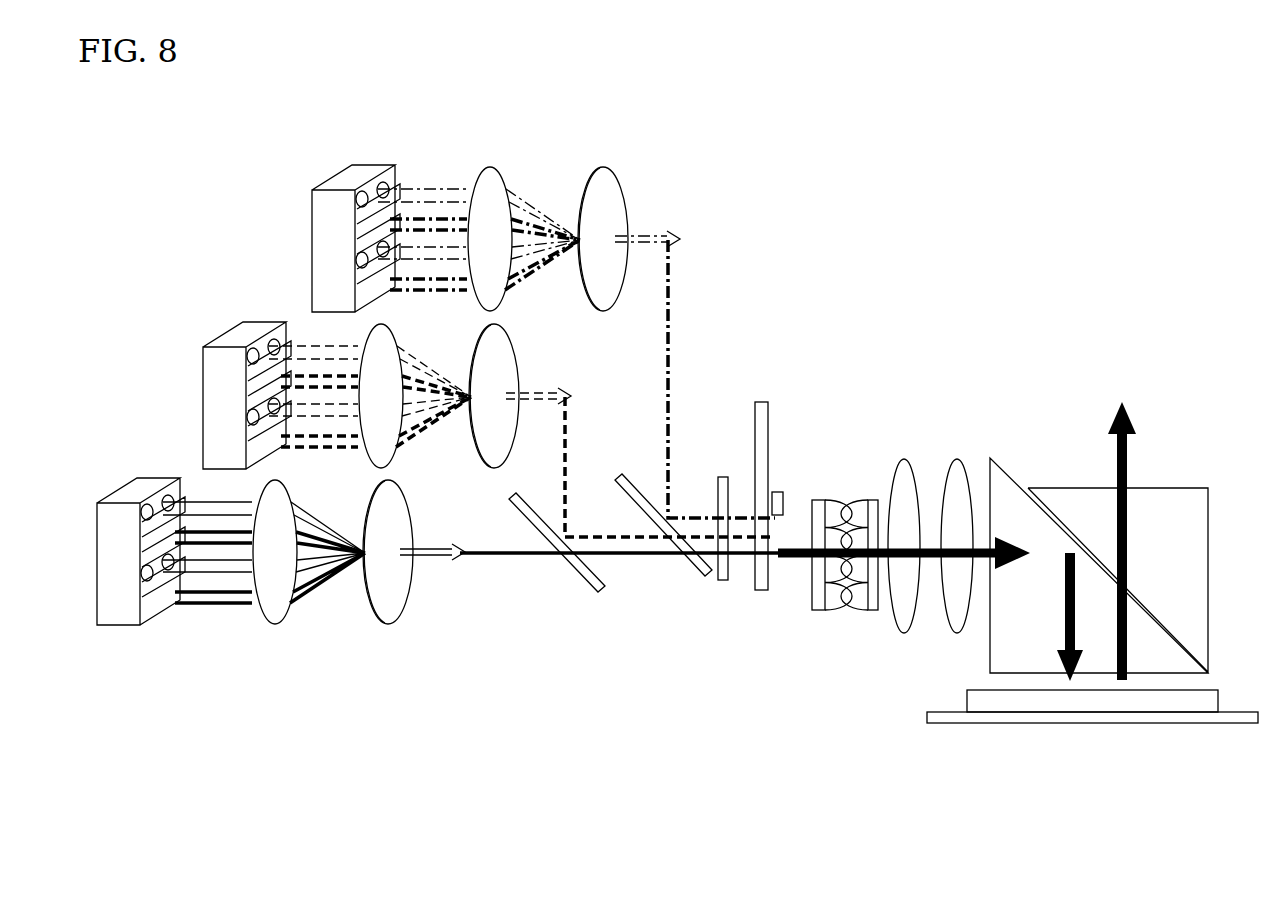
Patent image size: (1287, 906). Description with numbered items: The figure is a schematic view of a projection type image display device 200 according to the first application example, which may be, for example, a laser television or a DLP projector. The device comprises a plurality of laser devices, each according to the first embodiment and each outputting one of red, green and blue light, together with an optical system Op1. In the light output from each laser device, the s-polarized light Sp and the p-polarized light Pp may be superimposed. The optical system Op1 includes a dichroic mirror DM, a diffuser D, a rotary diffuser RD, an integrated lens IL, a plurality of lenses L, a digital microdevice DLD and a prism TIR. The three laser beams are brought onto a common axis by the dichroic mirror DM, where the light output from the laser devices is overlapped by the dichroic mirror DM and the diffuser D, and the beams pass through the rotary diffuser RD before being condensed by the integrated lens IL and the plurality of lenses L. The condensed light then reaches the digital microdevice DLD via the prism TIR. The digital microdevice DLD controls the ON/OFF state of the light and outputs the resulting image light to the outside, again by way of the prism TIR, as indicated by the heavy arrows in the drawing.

The s-polarized light Sp is at (213, 576).
The p-polarized light Pp is at (237, 607).
The dichroic mirror DM is at (597, 593).
The diffuser D is at (722, 477).
The rotary diffuser RD is at (770, 430).
The integrated lens IL is at (858, 468).
The lenses L is at (947, 478).
The optical system Op1 is at (912, 352).
The projection type image display device 200 is at (1072, 308).
The prism TIR is at (1160, 505).
The digital microdevice DLD is at (1086, 705).